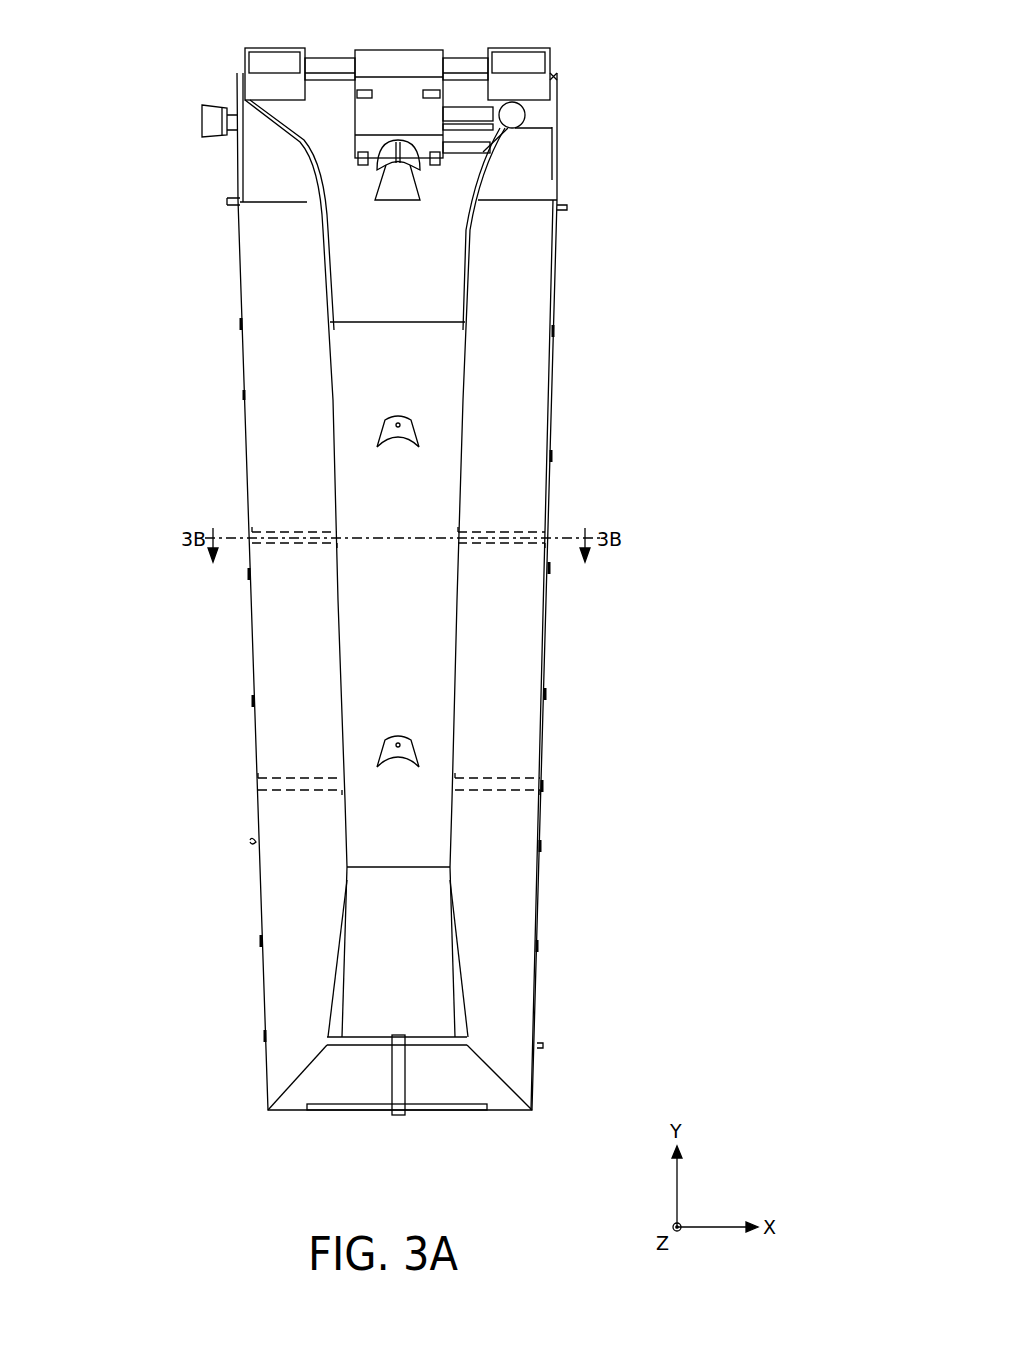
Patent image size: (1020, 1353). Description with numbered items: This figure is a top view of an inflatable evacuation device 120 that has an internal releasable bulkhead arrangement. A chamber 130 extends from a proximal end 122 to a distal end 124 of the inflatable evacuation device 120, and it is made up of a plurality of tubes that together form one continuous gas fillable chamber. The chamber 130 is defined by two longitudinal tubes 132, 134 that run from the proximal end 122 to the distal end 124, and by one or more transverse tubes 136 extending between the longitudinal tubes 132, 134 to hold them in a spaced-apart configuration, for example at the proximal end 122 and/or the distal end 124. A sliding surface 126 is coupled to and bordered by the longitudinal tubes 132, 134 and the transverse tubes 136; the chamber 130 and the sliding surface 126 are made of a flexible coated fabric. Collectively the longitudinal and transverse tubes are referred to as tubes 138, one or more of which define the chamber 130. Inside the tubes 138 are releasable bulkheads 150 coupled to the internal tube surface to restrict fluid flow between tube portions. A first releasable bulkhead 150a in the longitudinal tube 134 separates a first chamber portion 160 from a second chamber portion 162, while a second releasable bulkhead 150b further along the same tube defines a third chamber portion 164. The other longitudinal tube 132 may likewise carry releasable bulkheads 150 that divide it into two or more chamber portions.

The inflatable evacuation device 120 is at (672, 132).
The proximal end 122 is at (556, 72).
The distal end 124 is at (532, 1110).
The sliding surface 126 is at (393, 392).
The chamber 130 is at (280, 380).
The longitudinal tube 132 is at (482, 858).
The longitudinal tube 134 is at (300, 980).
The transverse tube 136 is at (440, 1088).
The tubes 138 is at (658, 845).
The releasable bulkhead 150 is at (545, 532).
The first releasable bulkhead 150a is at (277, 530).
The second releasable bulkhead 150b is at (286, 778).
The first chamber portion 160 is at (167, 66).
The second chamber portion 162 is at (130, 533).
The third chamber portion 164 is at (163, 782).